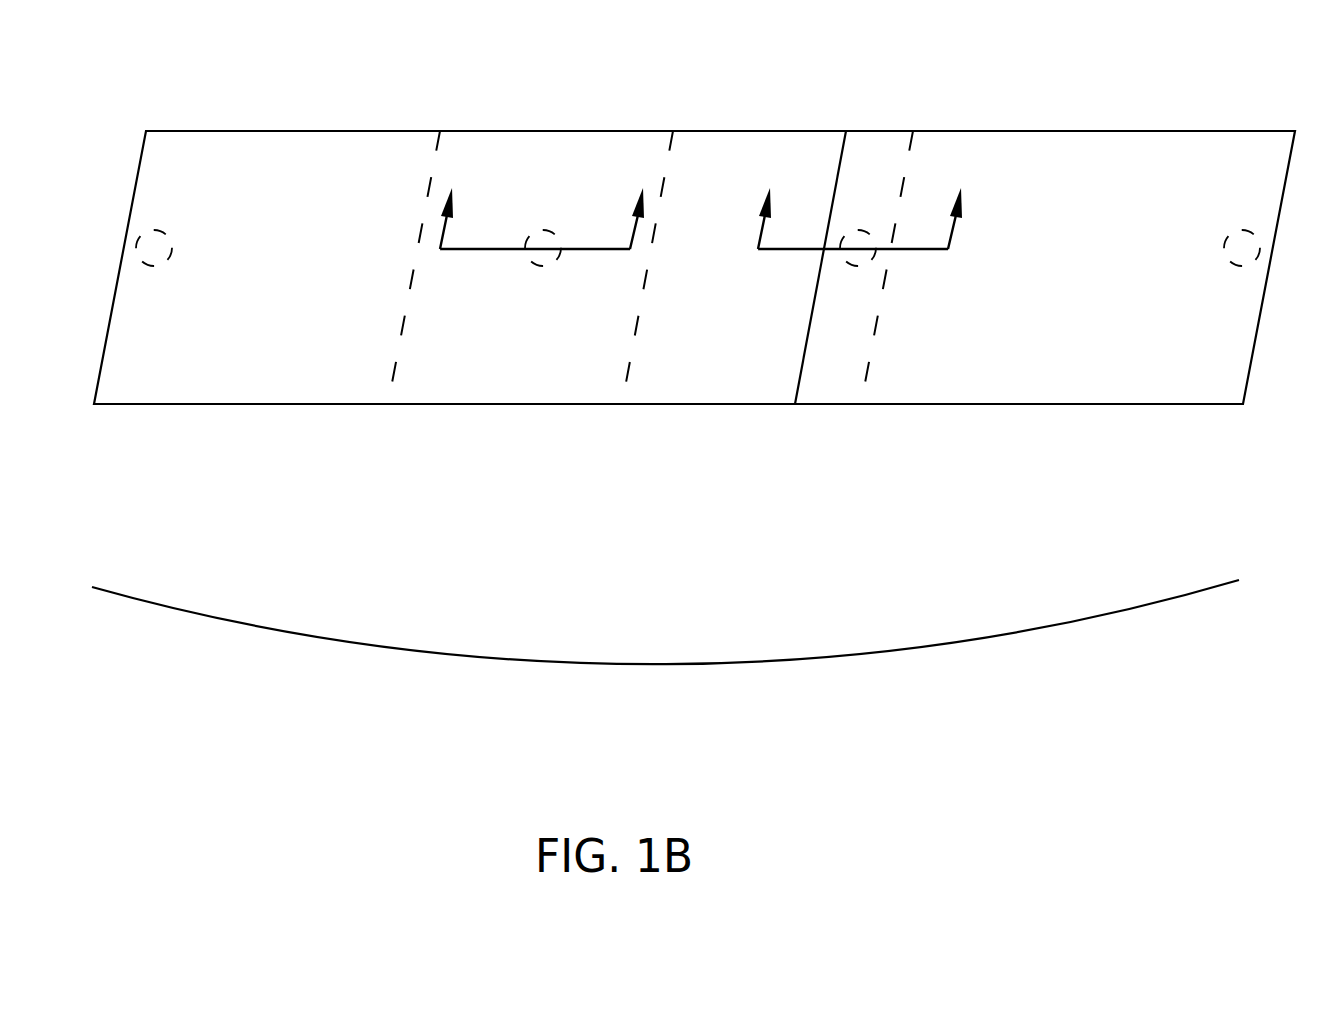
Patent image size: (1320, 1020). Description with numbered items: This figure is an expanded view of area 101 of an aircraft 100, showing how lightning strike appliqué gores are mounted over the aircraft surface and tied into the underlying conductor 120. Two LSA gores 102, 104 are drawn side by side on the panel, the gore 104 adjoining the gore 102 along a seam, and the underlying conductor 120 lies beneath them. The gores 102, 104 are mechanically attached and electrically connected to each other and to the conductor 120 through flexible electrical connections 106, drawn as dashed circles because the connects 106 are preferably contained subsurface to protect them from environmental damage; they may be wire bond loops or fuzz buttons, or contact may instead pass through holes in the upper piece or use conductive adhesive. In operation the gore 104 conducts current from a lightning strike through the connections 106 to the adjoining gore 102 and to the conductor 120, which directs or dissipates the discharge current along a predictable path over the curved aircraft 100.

The aircraft 100 is at (393, 646).
The area 101 is at (1140, 729).
The lightning strike appliqué gore 102 is at (300, 131).
The lightning strike appliqué gore 104 is at (1112, 131).
The flexible electrical connection 106 is at (530, 268).
The conductor 120 is at (516, 346).